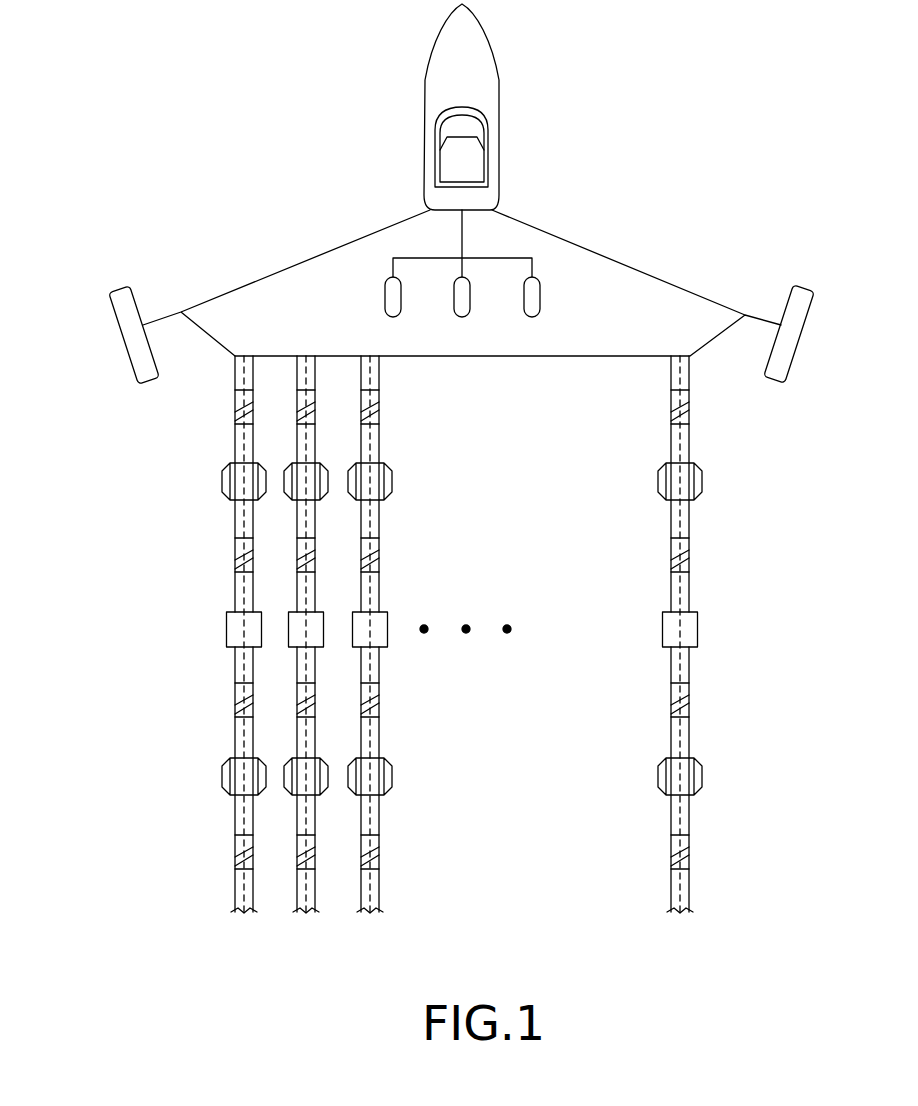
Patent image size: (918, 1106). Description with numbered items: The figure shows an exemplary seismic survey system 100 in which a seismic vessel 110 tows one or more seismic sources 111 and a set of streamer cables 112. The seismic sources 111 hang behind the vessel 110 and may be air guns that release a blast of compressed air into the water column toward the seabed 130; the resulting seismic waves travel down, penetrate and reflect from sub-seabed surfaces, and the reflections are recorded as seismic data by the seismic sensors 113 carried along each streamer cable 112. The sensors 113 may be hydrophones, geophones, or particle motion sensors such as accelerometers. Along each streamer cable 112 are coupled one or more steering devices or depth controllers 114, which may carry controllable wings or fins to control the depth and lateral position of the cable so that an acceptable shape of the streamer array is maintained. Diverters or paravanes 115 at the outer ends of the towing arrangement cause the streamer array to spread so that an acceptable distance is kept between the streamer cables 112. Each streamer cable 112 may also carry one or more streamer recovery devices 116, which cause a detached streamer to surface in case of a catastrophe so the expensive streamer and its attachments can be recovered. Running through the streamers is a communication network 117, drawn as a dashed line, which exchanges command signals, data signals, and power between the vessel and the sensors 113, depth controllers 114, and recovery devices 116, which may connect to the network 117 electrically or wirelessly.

The seismic survey system 100 is at (120, 114).
The seismic vessel 110 is at (500, 95).
The seismic source 111 is at (474, 324).
The streamer cable 112 is at (379, 371).
The seismic sensor 113 is at (379, 409).
The depth controller 114 is at (400, 474).
The diverter 115 is at (793, 302).
The streamer recovery device 116 is at (388, 633).
The communication network 117 is at (235, 387).
The seabed 130 is at (533, 578).